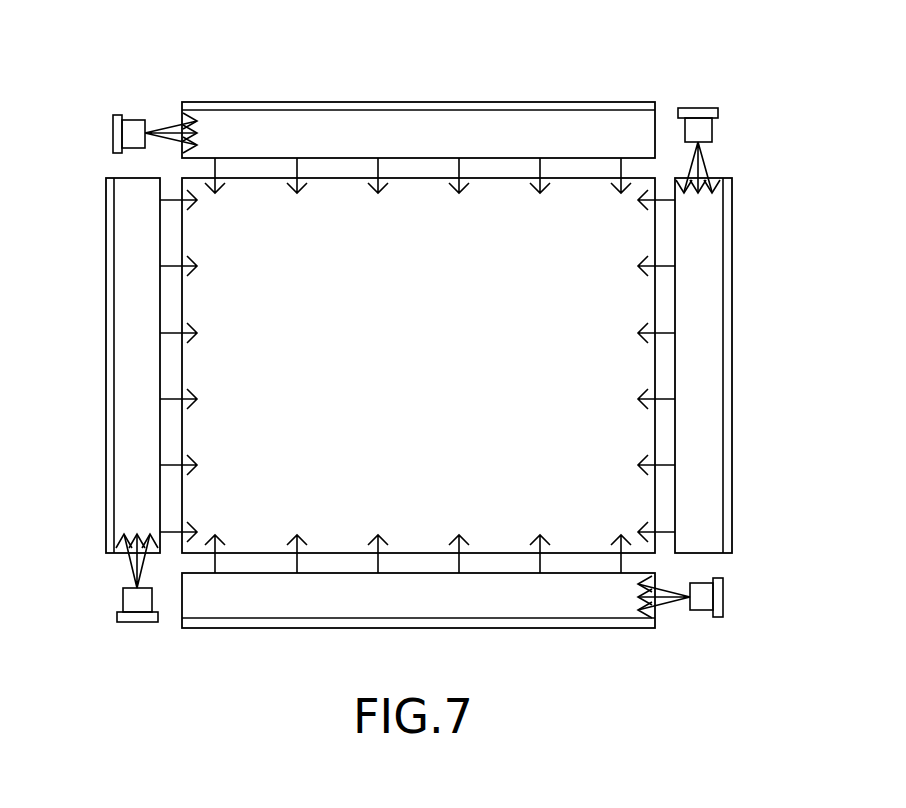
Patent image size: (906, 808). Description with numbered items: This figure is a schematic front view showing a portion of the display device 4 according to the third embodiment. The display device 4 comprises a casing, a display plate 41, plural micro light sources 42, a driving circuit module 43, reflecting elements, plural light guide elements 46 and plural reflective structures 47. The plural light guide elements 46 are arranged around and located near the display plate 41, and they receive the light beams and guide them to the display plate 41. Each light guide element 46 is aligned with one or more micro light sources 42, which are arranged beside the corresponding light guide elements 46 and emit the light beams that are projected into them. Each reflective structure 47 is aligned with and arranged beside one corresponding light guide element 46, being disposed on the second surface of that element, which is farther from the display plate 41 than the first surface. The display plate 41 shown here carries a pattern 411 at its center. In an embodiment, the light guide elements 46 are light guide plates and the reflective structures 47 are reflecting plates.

The display device 4 is at (244, 47).
The display plate 41 is at (587, 379).
The display pattern (logo) 411 is at (450, 350).
The micro light source 42 is at (133, 126).
The driving circuit module 43 is at (118, 133).
The light guide element 46 is at (378, 120).
The reflective structure 47 is at (553, 104).